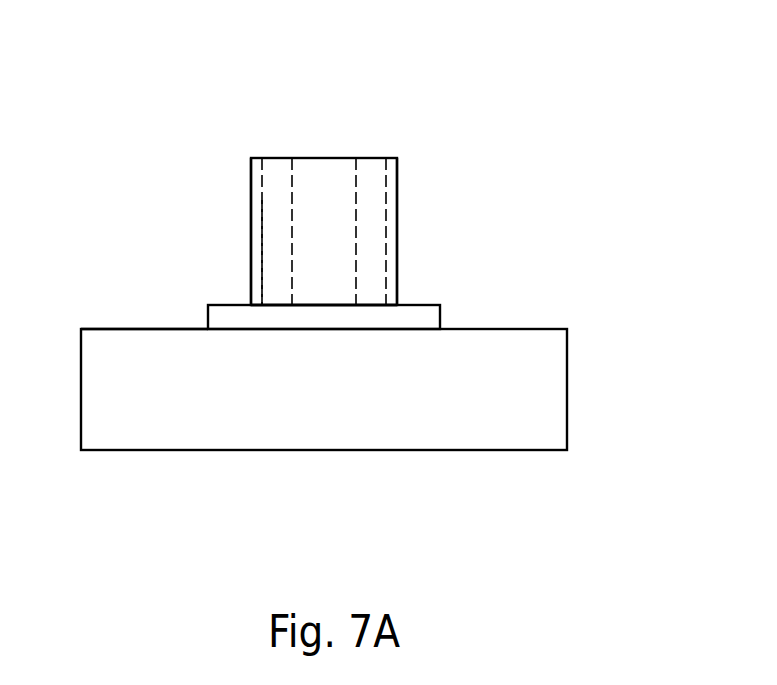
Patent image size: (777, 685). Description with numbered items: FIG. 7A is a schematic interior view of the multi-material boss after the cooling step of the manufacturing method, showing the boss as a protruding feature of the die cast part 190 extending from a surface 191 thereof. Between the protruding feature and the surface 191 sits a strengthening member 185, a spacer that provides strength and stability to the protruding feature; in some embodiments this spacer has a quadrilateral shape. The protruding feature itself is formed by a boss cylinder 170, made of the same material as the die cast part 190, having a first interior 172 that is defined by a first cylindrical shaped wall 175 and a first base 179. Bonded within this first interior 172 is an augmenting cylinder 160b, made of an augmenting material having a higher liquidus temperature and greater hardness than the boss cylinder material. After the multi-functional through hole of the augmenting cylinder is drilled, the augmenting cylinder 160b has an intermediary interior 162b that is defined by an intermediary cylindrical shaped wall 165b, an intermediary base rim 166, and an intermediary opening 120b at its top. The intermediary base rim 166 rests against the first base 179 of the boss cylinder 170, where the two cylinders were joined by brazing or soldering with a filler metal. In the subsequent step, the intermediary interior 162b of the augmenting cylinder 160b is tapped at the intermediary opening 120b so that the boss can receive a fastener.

The intermediary opening 120b is at (340, 127).
The augmenting cylinder 160b is at (373, 182).
The intermediary cylindrical shaped wall 165b is at (290, 185).
The boss cylinder 170 is at (250, 190).
The first cylindrical shaped wall 175 is at (250, 240).
The first interior 172 is at (244, 271).
The intermediary interior 162b is at (368, 251).
The first base 179 is at (327, 303).
The intermediary base rim 166 is at (385, 303).
The strengthening member 185 is at (207, 313).
The surface 191 is at (120, 328).
The die cast part 190 is at (568, 372).